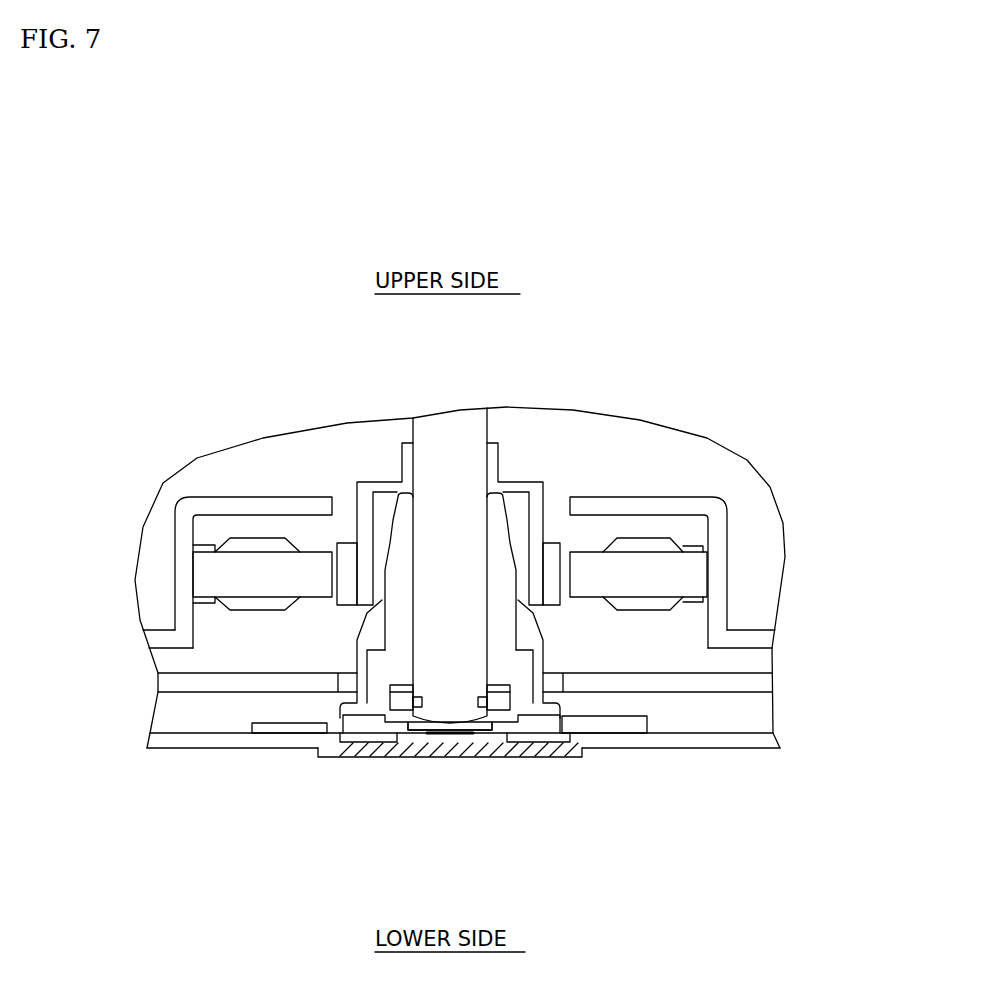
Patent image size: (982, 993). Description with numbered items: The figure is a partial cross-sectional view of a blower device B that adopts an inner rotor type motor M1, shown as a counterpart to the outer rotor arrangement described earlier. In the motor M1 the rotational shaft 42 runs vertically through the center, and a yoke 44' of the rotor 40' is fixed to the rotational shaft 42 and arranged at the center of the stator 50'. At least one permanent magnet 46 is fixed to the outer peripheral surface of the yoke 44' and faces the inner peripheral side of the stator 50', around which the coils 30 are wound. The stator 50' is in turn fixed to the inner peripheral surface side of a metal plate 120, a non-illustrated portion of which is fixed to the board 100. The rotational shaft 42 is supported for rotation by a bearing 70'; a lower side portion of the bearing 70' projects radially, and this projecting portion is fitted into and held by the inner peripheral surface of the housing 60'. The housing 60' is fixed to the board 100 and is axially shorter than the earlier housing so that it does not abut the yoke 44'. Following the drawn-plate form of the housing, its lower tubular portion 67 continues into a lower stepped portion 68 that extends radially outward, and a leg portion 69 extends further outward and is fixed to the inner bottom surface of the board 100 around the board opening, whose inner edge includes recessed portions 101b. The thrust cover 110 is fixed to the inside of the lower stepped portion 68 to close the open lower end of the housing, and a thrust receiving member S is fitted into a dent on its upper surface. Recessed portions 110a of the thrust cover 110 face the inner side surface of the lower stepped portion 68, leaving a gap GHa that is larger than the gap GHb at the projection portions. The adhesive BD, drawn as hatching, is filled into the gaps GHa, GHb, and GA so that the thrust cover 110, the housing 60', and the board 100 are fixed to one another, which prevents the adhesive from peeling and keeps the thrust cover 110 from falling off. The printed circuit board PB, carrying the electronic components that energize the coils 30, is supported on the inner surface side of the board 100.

The coil 30 is at (266, 537).
The permanent magnet 46 is at (347, 553).
The yoke 44' is at (442, 497).
The rotational shaft 42 is at (465, 453).
The inner rotor type motor M1 is at (513, 447).
The rotor 40' is at (470, 485).
The stator 50' is at (687, 469).
The blower device B is at (752, 423).
The metal plate 120 is at (717, 550).
The bearing 70' is at (401, 659).
The housing 60' is at (604, 676).
The leg portion 69 is at (263, 733).
The lower tubular portion 67 is at (337, 693).
The recessed portion 101b is at (347, 757).
The gap GHa is at (347, 700).
The recessed portion 110a is at (365, 730).
The adhesive BD is at (418, 750).
The thrust receiving member S is at (480, 730).
The gap GA is at (551, 705).
The thrust cover 110 is at (470, 747).
The gap GHb is at (560, 705).
The lower stepped portion 68 is at (577, 716).
The board 100 is at (643, 752).
The printed circuit board PB is at (718, 700).